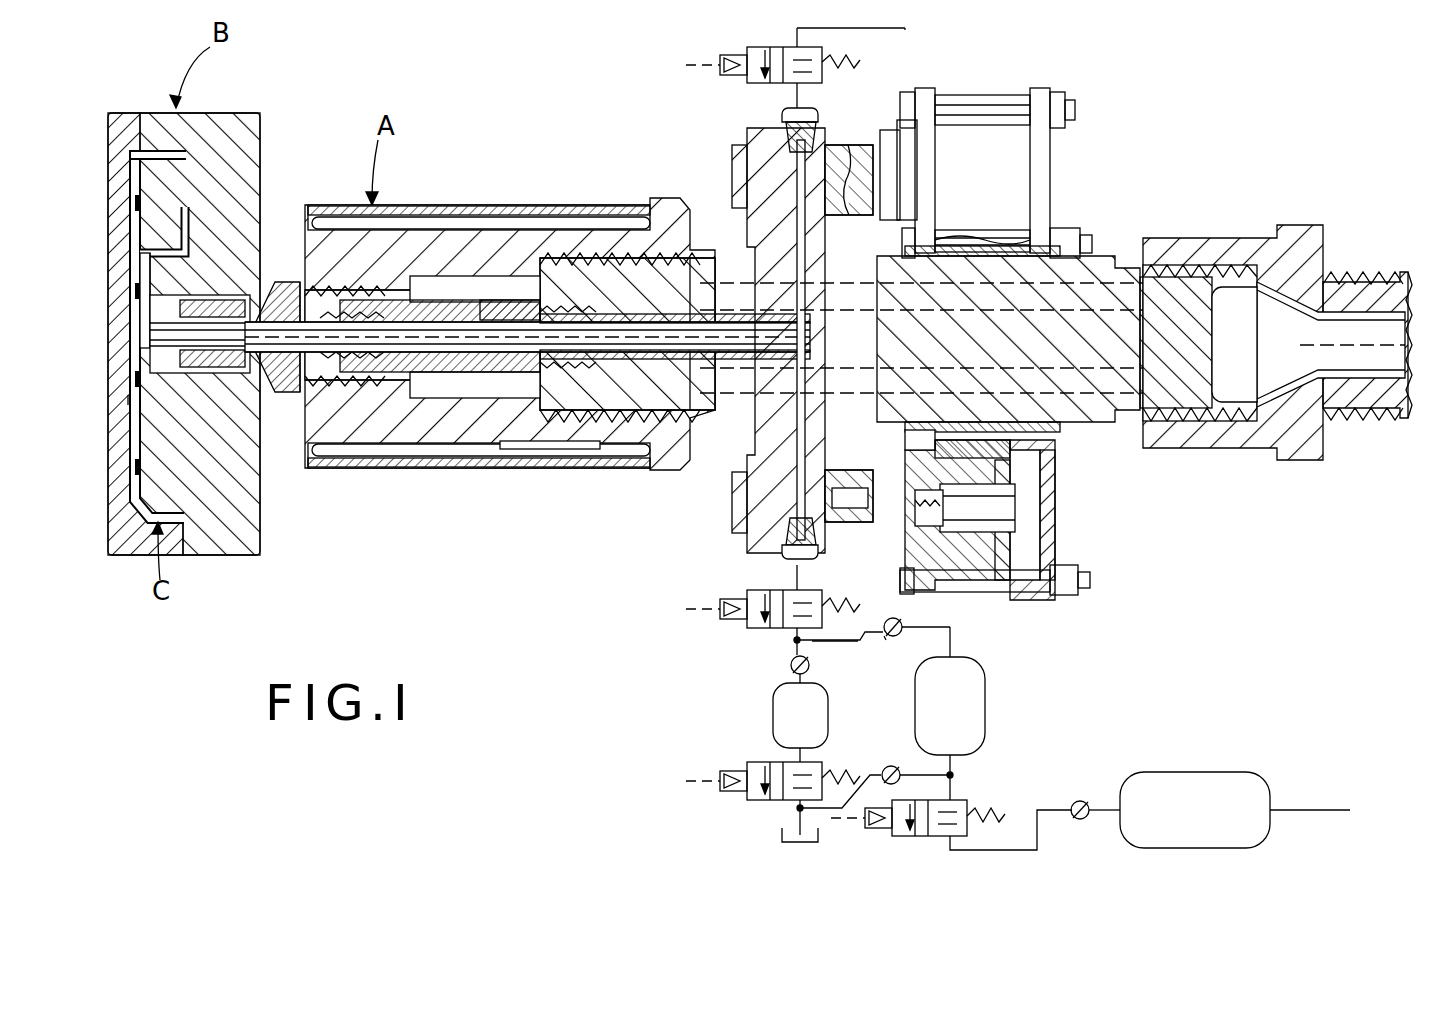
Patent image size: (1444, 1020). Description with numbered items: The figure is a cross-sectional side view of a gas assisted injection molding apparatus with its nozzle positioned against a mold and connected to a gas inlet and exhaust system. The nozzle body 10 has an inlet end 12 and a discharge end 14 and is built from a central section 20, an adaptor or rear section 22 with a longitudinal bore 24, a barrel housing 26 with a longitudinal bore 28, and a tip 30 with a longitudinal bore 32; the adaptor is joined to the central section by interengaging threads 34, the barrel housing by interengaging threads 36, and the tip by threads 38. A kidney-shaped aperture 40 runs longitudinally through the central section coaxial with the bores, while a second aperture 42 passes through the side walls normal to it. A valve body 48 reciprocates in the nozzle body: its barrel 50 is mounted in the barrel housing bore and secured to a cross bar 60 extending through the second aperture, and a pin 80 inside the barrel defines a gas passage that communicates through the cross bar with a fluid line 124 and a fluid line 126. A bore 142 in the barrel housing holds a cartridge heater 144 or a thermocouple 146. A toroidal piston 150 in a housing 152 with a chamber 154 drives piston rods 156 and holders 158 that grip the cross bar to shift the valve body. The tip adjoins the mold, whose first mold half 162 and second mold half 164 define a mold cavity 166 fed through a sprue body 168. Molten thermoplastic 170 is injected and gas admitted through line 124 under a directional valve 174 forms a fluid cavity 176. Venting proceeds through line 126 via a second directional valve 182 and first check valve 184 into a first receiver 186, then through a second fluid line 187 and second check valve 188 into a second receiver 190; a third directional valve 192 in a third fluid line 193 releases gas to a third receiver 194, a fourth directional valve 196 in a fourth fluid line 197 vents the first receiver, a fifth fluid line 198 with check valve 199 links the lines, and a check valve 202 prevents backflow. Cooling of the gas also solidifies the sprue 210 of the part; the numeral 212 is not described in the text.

The nozzle body 10 is at (1103, 235).
The inlet end 12 is at (1360, 418).
The discharge end 14 is at (282, 393).
The central section 20 is at (1118, 430).
The adaptor or rear section 22 is at (1325, 475).
The longitudinal bore 24 is at (1332, 305).
The barrel housing 26 is at (505, 200).
The longitudinal bore 28 is at (452, 385).
The tip 30 is at (280, 270).
The longitudinal bore 32 is at (246, 352).
The interengaging threads 34 is at (1170, 265).
The interengaging threads 36 is at (582, 258).
The threads 38 is at (347, 294).
The kidney-shaped aperture 40 is at (978, 284).
The second aperture 42 is at (714, 262).
The valve body 48 is at (480, 372).
The barrel 50 is at (488, 316).
The cross bar 60 is at (762, 138).
The pin 80 is at (440, 318).
The fluid line 124 is at (907, 30).
The fluid line 126 is at (790, 580).
The longitudinally extending bore 142 is at (440, 465).
The cartridge heater 144 is at (432, 212).
The thermocouple 146 is at (548, 452).
The piston 150 is at (990, 555).
The housing 152 is at (1045, 484).
The chamber or cavity 154 is at (1010, 522).
The piston rods 156 is at (860, 185).
The holders 158 is at (845, 145).
The first mold half 162 is at (228, 135).
The second mold half 164 is at (128, 135).
The mold cavity 166 is at (138, 452).
The sprue body 168 is at (185, 368).
The molten thermoplastic 170 is at (140, 155).
The directional valve 174 is at (768, 45).
The fluid cavity 176 is at (165, 215).
The second directional valve 182 is at (790, 634).
The first check valve 184 is at (792, 670).
The first receiver 186 is at (805, 705).
The second fluid line 187 is at (828, 645).
The second check valve 188 is at (900, 622).
The second receiver 190 is at (970, 684).
The third directional valve 192 is at (912, 838).
The third fluid line 193 is at (955, 768).
The third receiver 194 is at (1200, 797).
The fourth directional valve 196 is at (755, 799).
The fourth fluid line 197 is at (795, 754).
The fifth fluid line 198 is at (870, 777).
The check valve 199 is at (897, 770).
The check valve 202 is at (1085, 800).
The sprue 210 is at (207, 300).
The air line 212 is at (748, 628).